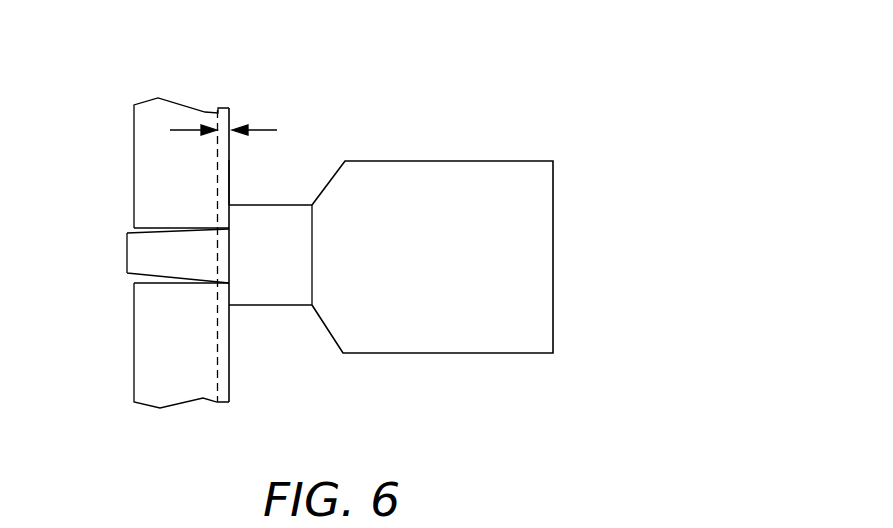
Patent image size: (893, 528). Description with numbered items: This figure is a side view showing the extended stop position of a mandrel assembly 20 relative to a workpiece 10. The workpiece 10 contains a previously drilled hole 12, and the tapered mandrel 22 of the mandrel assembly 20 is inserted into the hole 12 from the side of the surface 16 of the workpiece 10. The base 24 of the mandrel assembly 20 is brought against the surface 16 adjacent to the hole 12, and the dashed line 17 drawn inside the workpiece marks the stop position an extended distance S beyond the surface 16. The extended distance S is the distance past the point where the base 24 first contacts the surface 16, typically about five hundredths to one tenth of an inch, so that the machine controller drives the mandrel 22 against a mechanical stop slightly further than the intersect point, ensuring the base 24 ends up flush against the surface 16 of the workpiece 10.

The workpiece 10 is at (148, 165).
The hole 12 is at (140, 233).
The surface of the workpiece 16 is at (230, 182).
The surface layer boundary 17 is at (245, 113).
The mandrel assembly 20 is at (532, 267).
The mandrel 22 is at (132, 258).
The base of the mandrel 24 is at (270, 288).
The extended distance S is at (235, 131).